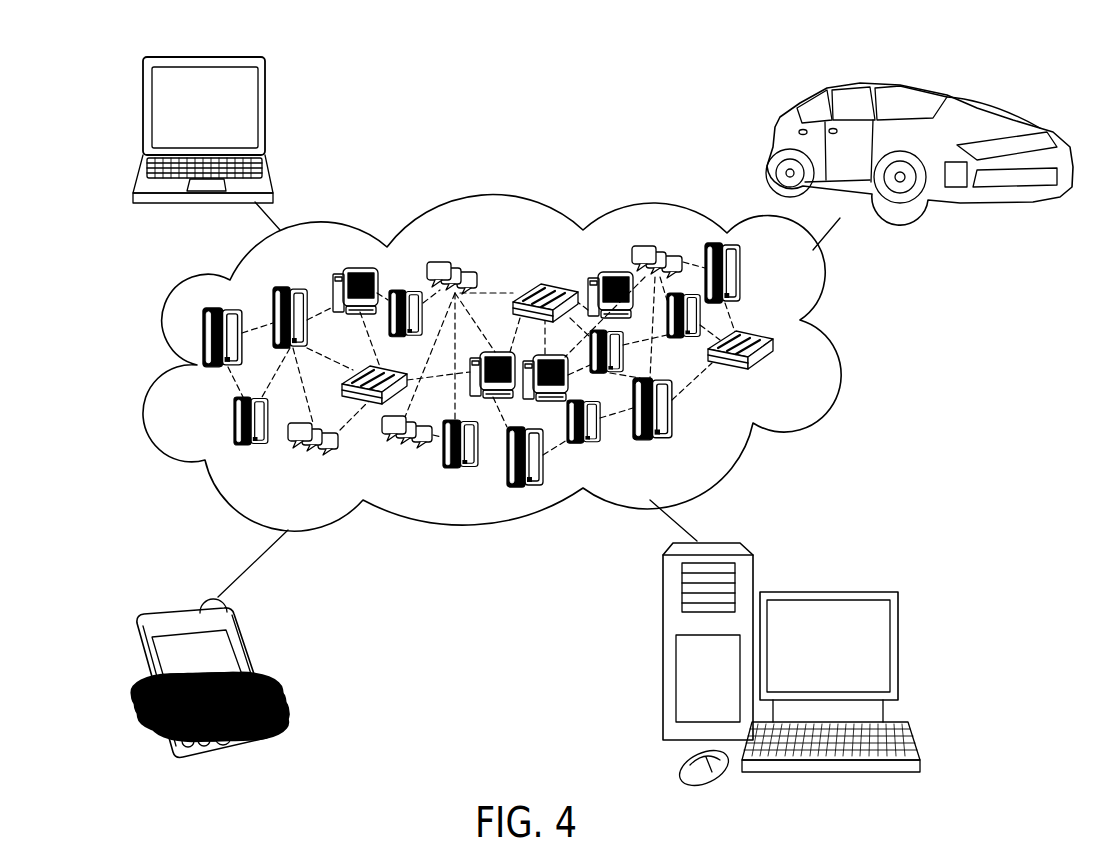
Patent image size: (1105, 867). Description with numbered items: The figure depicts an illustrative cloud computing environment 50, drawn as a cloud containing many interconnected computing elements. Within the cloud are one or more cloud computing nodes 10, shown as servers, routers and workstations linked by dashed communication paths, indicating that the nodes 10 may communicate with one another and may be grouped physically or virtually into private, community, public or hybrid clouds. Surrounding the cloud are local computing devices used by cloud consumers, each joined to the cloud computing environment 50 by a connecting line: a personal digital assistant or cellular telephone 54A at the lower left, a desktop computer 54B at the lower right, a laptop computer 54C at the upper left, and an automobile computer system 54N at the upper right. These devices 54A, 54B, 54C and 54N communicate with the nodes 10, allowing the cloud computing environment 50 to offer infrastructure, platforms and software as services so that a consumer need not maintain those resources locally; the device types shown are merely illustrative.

The cloud computing nodes 10 is at (792, 372).
The cloud computing environment 50 is at (843, 355).
The personal digital assistant (PDA) or cellular telephone 54A is at (253, 667).
The desktop computer 54B is at (860, 593).
The laptop computer 54C is at (265, 123).
The automobile computer system 54N is at (970, 110).